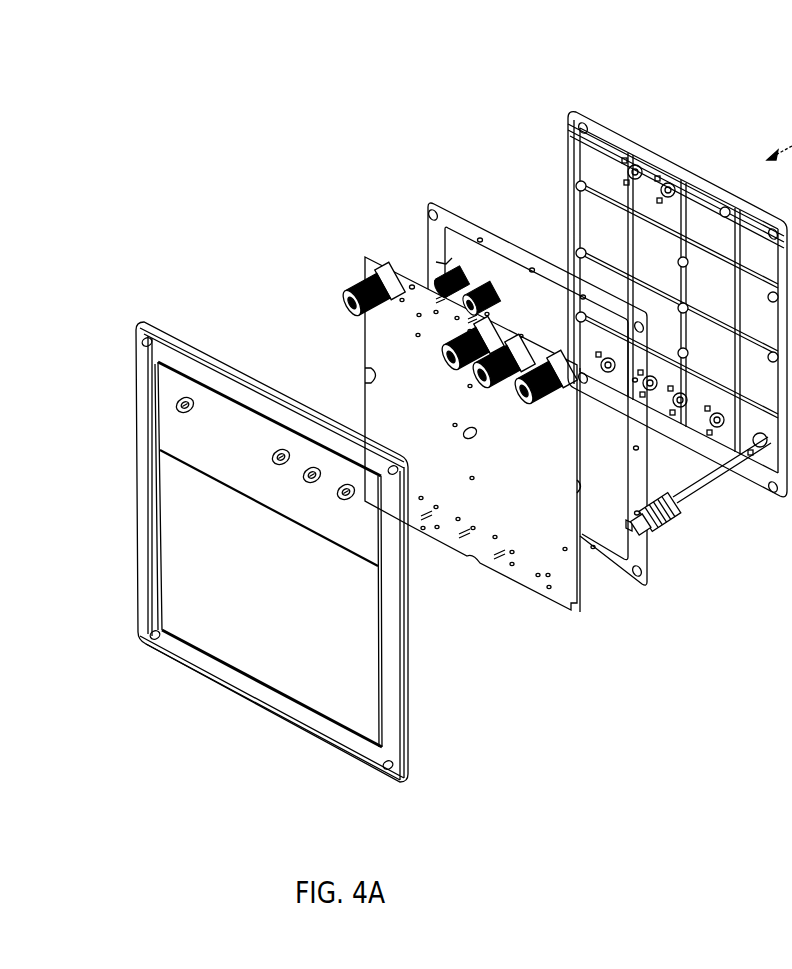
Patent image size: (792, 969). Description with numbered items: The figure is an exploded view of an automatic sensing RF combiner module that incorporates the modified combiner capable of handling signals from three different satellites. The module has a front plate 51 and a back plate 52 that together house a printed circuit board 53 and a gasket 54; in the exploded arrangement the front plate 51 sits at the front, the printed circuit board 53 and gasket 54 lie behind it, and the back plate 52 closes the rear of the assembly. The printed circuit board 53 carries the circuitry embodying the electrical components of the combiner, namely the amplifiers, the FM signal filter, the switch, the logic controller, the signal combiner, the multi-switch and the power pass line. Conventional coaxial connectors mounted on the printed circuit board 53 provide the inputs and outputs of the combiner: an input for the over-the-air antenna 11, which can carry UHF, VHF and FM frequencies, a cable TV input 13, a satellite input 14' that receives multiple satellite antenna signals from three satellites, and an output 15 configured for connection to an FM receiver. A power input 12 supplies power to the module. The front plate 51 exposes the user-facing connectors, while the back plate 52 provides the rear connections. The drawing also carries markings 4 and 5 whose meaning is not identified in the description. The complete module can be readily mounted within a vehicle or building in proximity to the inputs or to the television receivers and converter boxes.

The front plate 51 is at (187, 337).
The back plate 52 is at (593, 113).
The printed circuit board 53 is at (403, 262).
The gasket 54 is at (487, 233).
The cable TV input 13 is at (368, 282).
The over-the-air antenna input 11 is at (478, 298).
The output 15 is at (442, 270).
The satellite input 14' is at (508, 413).
The power input 12 is at (703, 483).
The detail view reference 4 is at (692, 497).
The multisource signal controller 5 is at (786, 647).